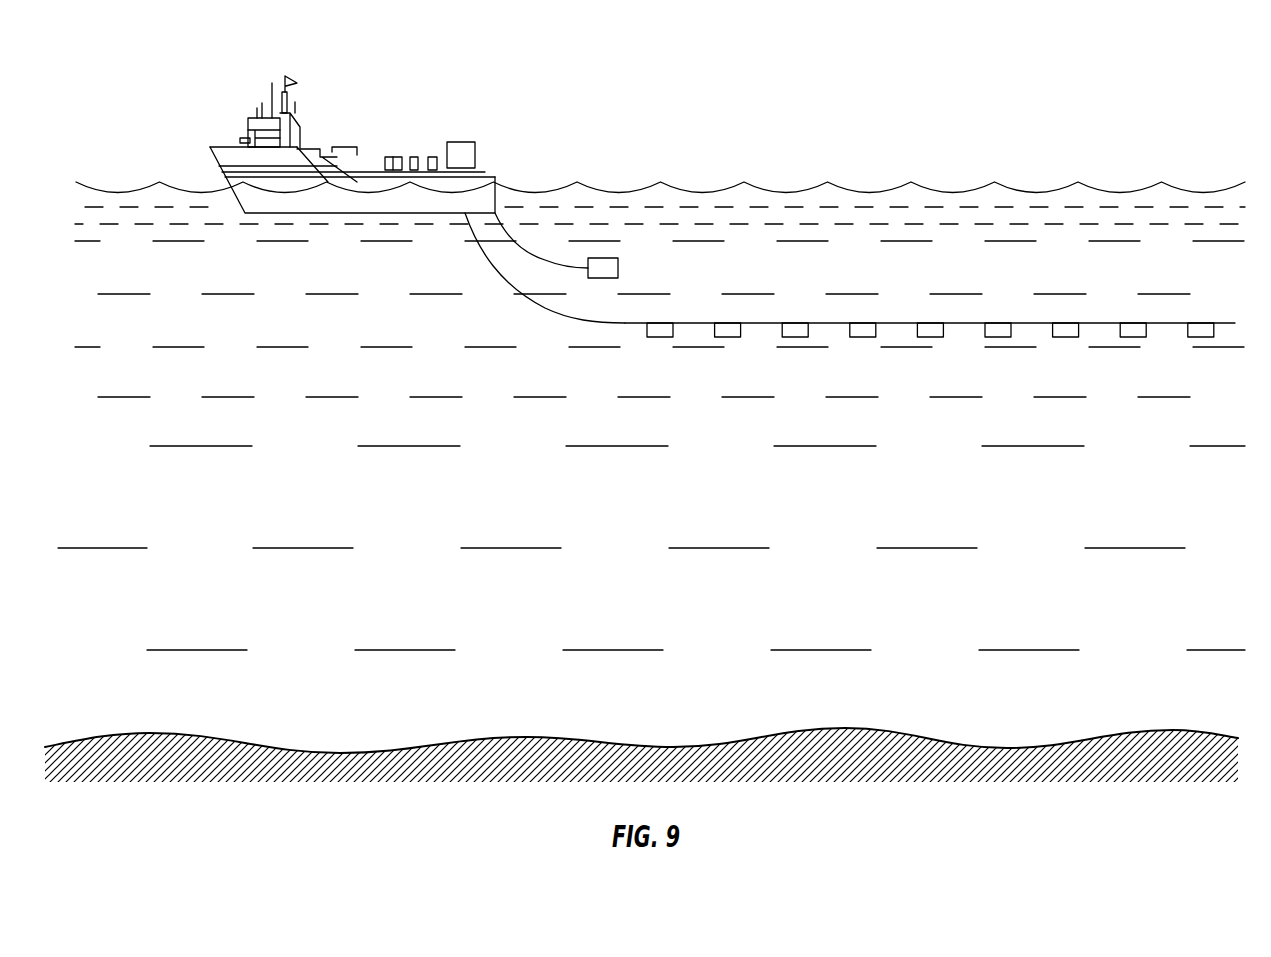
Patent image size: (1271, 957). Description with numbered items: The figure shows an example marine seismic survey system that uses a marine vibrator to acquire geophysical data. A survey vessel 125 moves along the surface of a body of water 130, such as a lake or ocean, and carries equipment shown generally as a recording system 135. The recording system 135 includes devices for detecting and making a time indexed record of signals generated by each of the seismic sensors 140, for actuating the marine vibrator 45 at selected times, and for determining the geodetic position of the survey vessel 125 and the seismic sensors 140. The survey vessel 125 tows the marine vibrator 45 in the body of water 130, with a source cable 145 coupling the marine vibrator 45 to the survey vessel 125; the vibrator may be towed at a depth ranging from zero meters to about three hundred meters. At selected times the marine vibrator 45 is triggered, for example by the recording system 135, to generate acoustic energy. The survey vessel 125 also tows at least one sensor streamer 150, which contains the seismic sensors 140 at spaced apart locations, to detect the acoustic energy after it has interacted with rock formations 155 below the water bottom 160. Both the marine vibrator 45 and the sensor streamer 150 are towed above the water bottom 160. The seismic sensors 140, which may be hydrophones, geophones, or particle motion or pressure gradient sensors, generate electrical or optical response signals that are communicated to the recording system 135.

The marine vibrator 45 is at (603, 258).
The survey vessel 125 is at (495, 191).
The body of water 130 is at (477, 332).
The recording system 135 is at (458, 142).
The seismic sensors 140 is at (795, 337).
The source cable 145 is at (542, 258).
The sensor streamer 150 is at (887, 323).
The rock formations 155 is at (1170, 822).
The water bottom 160 is at (1163, 728).